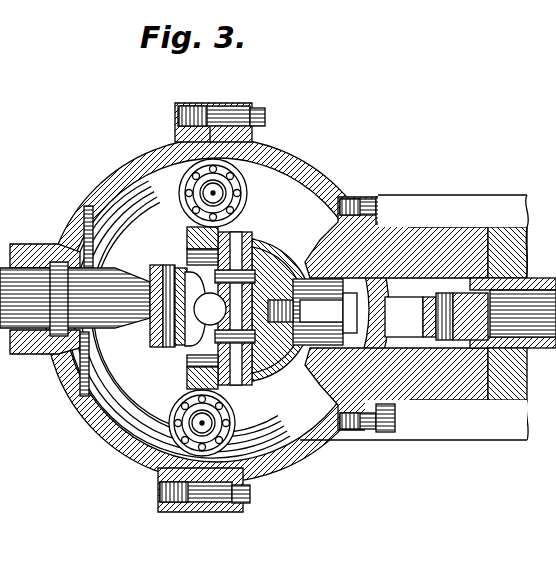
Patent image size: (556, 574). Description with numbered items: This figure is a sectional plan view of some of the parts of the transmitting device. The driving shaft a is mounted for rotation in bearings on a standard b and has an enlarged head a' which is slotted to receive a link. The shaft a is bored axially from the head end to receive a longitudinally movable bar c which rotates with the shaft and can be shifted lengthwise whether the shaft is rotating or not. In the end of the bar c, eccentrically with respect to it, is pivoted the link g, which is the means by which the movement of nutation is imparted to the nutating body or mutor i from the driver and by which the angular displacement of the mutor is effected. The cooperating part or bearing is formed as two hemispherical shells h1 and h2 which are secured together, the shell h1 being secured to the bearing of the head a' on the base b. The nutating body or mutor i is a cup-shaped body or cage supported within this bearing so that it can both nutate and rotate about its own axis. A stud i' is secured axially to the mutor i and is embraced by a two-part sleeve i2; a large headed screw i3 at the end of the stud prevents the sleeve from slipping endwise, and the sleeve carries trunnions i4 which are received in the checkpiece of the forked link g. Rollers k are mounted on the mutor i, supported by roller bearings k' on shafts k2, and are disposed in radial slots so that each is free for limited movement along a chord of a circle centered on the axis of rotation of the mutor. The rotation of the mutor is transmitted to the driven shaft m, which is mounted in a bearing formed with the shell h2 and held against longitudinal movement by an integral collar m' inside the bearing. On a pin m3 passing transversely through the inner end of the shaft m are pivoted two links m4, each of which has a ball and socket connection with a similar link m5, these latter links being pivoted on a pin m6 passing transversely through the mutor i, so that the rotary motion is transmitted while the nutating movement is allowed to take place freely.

The stud i' is at (171, 190).
The trunnions i4 is at (78, 0).
The two-part sleeve i2 is at (113, 0).
The large headed screw i3 is at (357, 307).
The nutating body or mutor i is at (242, 287).
The hemispherical shell h1 is at (318, 178).
The hemispherical shell h2 is at (118, 165).
The rollers k is at (226, 228).
The roller bearings k' is at (362, 194).
The shafts k2 is at (210, 196).
The driven shaft m is at (75, 299).
The integral collar m' is at (50, 303).
The pin m3 is at (168, 347).
The links m4 is at (153, 332).
The links m5 is at (250, 273).
The pin m6 is at (235, 383).
The link g is at (424, 316).
The driving shaft a is at (467, 271).
The enlarged head a' is at (413, 431).
The standard b is at (490, 433).
The longitudinally movable bar c is at (523, 313).